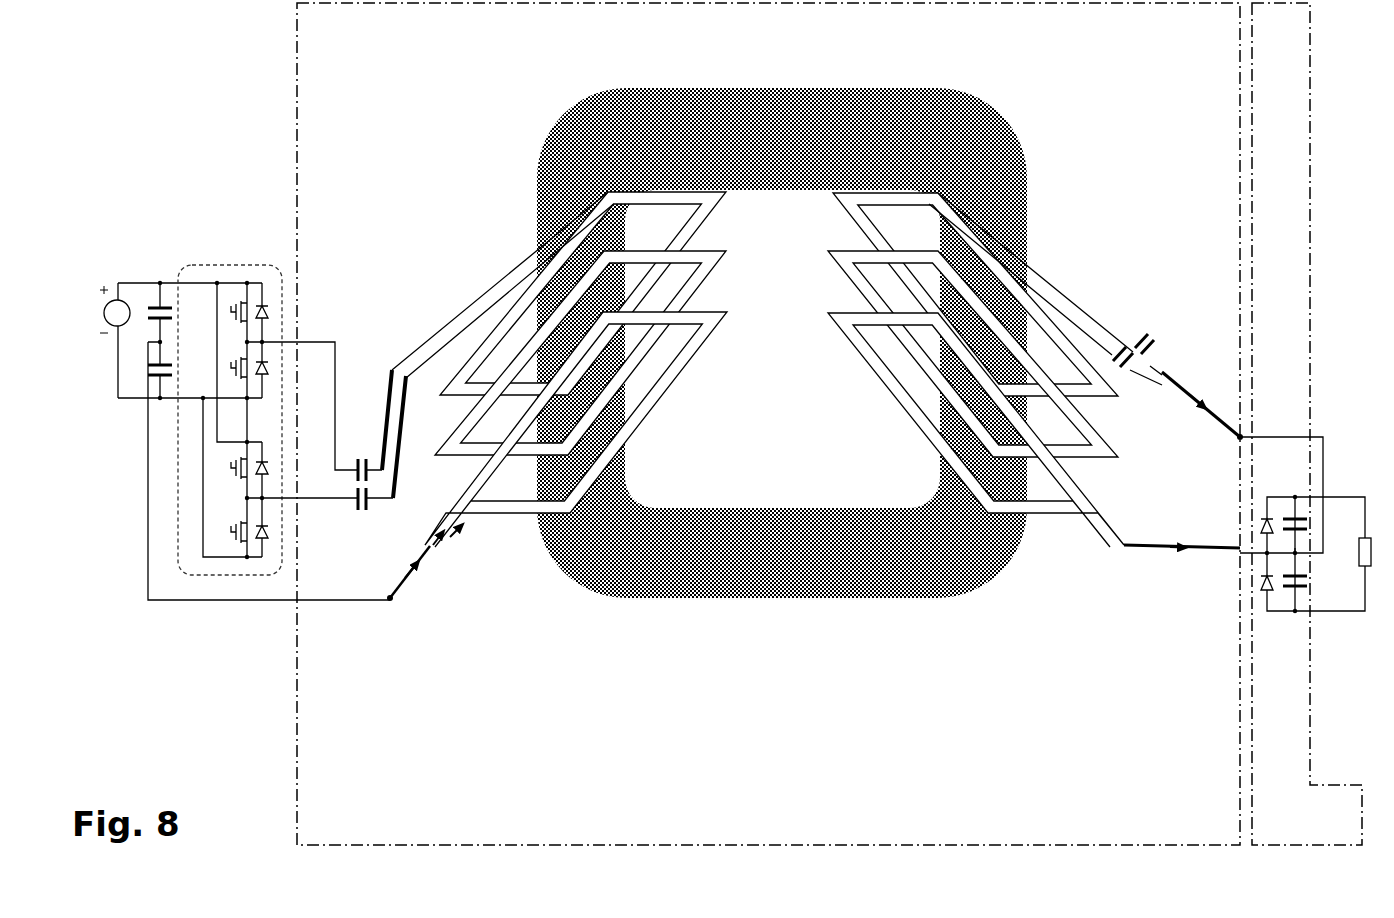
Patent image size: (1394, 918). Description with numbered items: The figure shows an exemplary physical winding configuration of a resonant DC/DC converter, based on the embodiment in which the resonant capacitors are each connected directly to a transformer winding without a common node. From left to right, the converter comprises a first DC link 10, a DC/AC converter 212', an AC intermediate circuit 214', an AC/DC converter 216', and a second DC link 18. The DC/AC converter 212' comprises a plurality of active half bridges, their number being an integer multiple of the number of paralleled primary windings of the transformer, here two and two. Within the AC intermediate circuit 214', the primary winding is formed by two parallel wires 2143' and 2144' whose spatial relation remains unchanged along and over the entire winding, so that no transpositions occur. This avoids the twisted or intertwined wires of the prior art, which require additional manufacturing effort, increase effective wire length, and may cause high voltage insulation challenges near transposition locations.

The first DC link 10 is at (160, 297).
The DC/AC converter 212' is at (271, 494).
The AC intermediate circuit 214' is at (720, 424).
The parallel wire 2143' is at (462, 322).
The parallel wire 2144' is at (405, 295).
The AC/DC converter 216' is at (1317, 424).
The second DC link 18 is at (1296, 592).